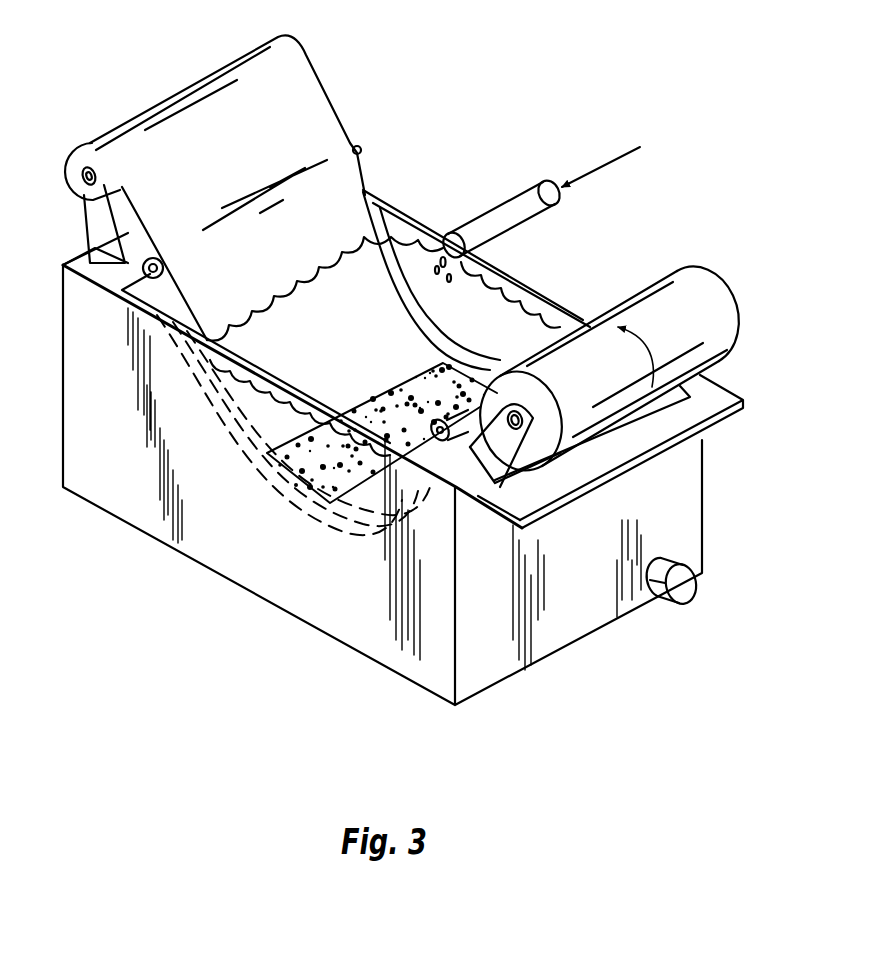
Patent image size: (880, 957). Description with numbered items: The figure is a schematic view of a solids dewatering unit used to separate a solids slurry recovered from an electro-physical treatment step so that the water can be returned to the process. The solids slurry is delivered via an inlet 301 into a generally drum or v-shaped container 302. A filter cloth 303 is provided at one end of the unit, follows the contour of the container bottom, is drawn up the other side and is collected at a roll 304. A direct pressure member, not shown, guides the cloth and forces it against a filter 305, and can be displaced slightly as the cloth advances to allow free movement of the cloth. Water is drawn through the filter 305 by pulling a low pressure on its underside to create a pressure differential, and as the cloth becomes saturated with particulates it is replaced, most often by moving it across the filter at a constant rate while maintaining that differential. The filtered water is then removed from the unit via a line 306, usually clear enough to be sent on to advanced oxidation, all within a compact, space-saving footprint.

The inlet 301 is at (510, 187).
The container 302 is at (187, 392).
The filter cloth 303 is at (150, 120).
The roll 304 is at (677, 262).
The filter 305 is at (297, 465).
The line 306 is at (678, 583).